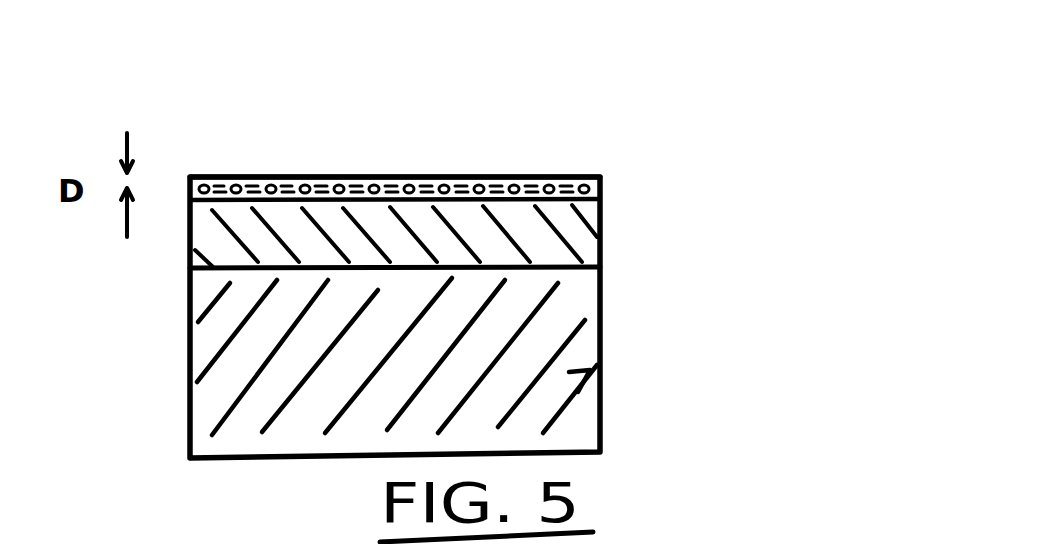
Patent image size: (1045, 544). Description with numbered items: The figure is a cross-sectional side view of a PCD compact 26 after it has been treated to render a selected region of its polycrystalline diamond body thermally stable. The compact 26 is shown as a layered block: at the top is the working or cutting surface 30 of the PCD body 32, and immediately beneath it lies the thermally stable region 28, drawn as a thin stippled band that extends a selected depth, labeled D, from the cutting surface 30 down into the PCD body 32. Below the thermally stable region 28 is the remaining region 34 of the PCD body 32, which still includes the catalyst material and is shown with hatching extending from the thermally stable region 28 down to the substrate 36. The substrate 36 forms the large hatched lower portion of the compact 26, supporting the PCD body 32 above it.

The PCD compact 26 is at (727, 222).
The thermally stable region 28 is at (580, 173).
The working or cutting surface 30 is at (413, 175).
The PCD body 32 is at (615, 255).
The remaining region 34 is at (238, 232).
The substrate 36 is at (603, 384).